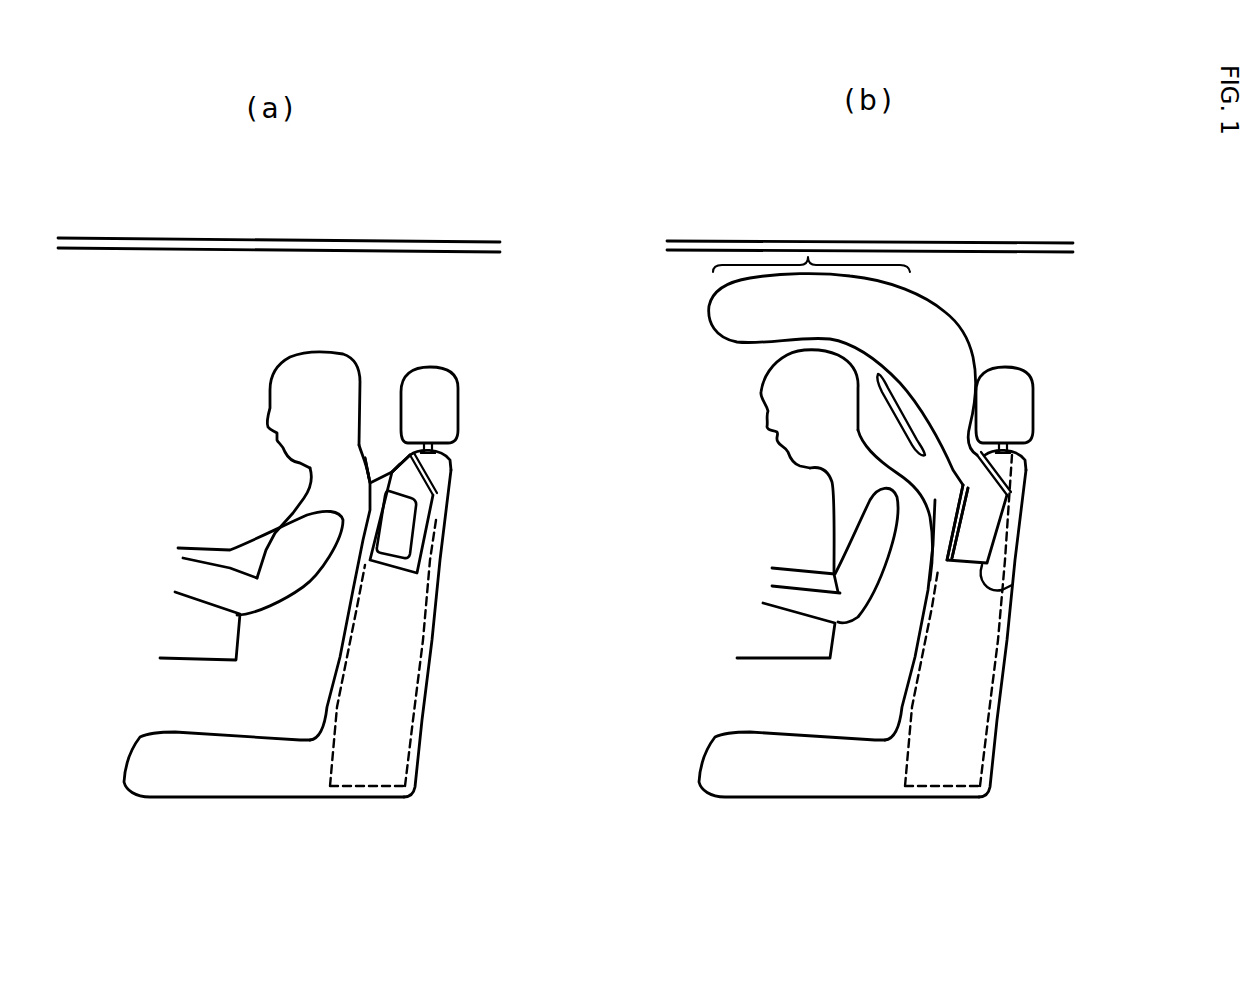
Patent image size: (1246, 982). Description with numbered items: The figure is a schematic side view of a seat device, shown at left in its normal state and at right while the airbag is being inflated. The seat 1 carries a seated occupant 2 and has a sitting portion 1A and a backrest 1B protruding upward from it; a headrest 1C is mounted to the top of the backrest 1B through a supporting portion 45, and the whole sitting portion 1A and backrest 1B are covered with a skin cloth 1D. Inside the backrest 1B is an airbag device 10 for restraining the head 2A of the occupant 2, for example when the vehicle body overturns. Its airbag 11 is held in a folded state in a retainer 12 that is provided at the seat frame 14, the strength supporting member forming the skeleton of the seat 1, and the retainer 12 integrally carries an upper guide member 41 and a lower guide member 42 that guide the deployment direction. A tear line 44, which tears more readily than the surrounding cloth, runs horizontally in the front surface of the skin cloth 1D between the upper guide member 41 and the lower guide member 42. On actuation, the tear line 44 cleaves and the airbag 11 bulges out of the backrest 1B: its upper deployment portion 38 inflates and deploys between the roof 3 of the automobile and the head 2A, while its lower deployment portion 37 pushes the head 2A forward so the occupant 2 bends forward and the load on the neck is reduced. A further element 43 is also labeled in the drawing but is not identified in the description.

The seat 1 is at (633, 566).
The sitting portion 1A is at (237, 783).
The backrest 1B is at (447, 467).
The headrest 1C is at (460, 405).
The skin cloth 1D is at (402, 447).
The occupant 2 is at (546, 474).
The head 2A is at (313, 352).
The roof 3 is at (301, 238).
The airbag device 10 is at (754, 436).
The airbag 11 is at (420, 517).
The retainer 12 is at (426, 553).
The seat frame 14 is at (357, 797).
The lower deployment portion 37 is at (893, 414).
The upper deployment portion 38 is at (808, 257).
The upper guide member 41 is at (443, 457).
The lower guide member 42 is at (365, 458).
The vent portion 43 is at (1012, 582).
The tear line 44 is at (398, 462).
The supporting portion 45 is at (437, 446).